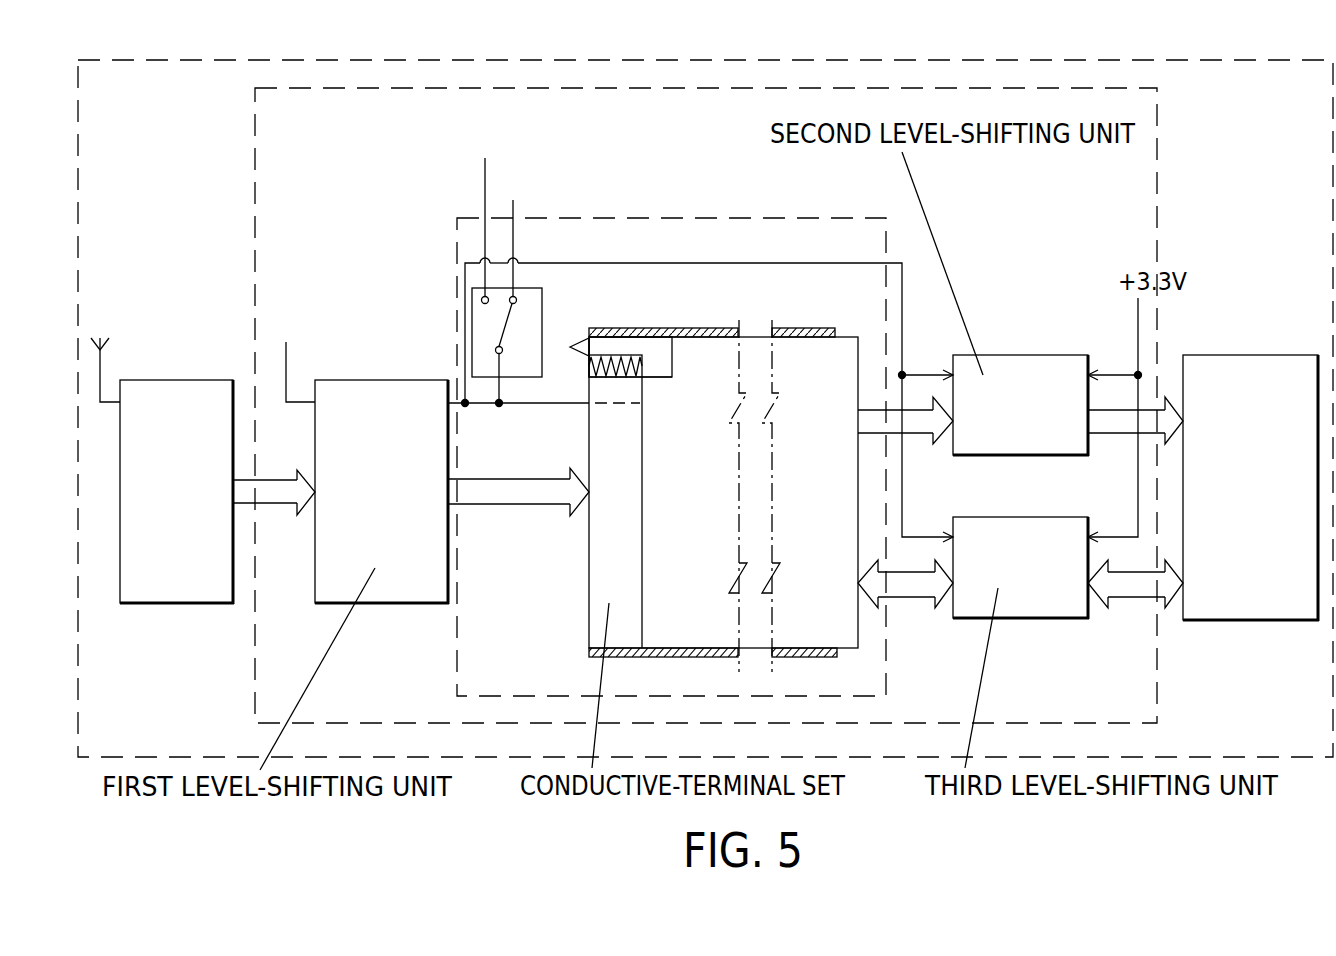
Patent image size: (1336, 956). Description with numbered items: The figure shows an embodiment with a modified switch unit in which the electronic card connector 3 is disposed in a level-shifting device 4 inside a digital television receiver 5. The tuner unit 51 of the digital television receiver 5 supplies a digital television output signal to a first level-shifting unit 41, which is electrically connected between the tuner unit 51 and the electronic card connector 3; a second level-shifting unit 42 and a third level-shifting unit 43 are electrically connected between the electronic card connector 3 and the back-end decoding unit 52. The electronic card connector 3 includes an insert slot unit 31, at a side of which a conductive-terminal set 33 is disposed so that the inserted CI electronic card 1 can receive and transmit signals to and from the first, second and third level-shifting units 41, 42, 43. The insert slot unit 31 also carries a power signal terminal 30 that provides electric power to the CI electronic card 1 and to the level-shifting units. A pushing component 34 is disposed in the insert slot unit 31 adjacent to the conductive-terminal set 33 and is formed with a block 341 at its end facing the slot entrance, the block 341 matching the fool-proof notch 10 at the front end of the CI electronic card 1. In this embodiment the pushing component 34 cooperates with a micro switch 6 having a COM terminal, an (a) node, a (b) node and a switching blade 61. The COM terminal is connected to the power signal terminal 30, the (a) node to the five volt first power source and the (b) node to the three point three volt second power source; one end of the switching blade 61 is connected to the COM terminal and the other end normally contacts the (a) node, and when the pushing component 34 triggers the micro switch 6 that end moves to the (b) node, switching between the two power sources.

The CI electronic card 1 is at (835, 378).
The electronic card connector 3 is at (773, 216).
The level-shifting device 4 is at (1159, 132).
The digital television receiver 5 is at (1236, 56).
The micro switch 6 is at (525, 287).
The fool-proof notch 10 is at (668, 363).
The power signal terminal 30 is at (530, 404).
The insert slot unit 31 is at (788, 323).
The conductive-terminal set 33 is at (589, 553).
The pushing component 34 is at (645, 330).
The block 341 is at (662, 350).
The first level-shifting unit 41 is at (382, 380).
The second level-shifting unit 42 is at (1053, 355).
The third level-shifting unit 43 is at (1065, 622).
The tuner unit 51 is at (197, 380).
The decoding unit 52 is at (1250, 355).
The switching blade 61 is at (502, 328).